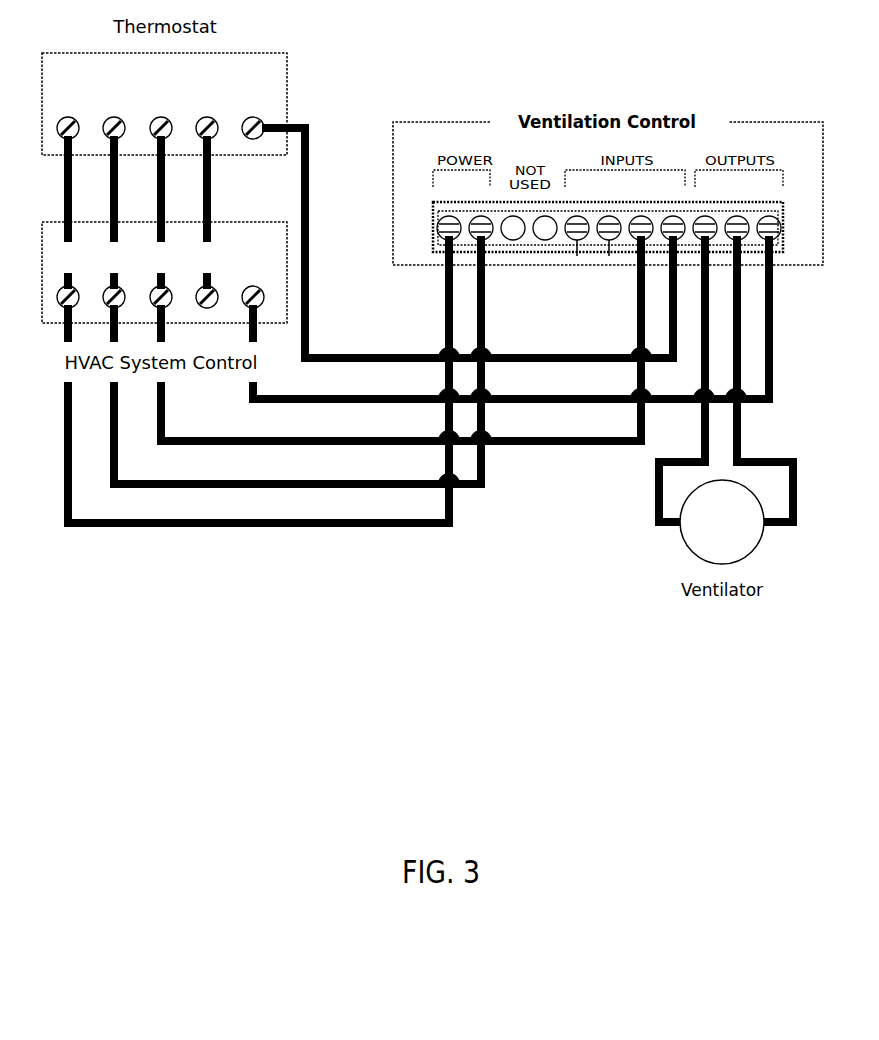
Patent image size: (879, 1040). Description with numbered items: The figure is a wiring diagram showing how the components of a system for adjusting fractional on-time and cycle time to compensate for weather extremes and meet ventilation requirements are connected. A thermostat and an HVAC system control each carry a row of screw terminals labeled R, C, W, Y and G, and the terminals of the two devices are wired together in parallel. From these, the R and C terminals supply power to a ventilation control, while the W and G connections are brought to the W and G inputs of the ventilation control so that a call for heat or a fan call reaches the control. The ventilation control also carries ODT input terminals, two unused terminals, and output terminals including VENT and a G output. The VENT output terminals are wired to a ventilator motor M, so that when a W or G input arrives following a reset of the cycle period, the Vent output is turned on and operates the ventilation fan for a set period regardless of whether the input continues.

The R (24 VAC power) terminal R is at (259, 195).
The C (common) terminal C is at (298, 195).
The W input W is at (401, 195).
The Y (cool call) terminal Y is at (207, 195).
The G input G is at (511, 195).
The outdoor temperature sensor input terminals ODT is at (593, 216).
The Vent output VENT is at (721, 208).
The ventilator motor M is at (722, 522).